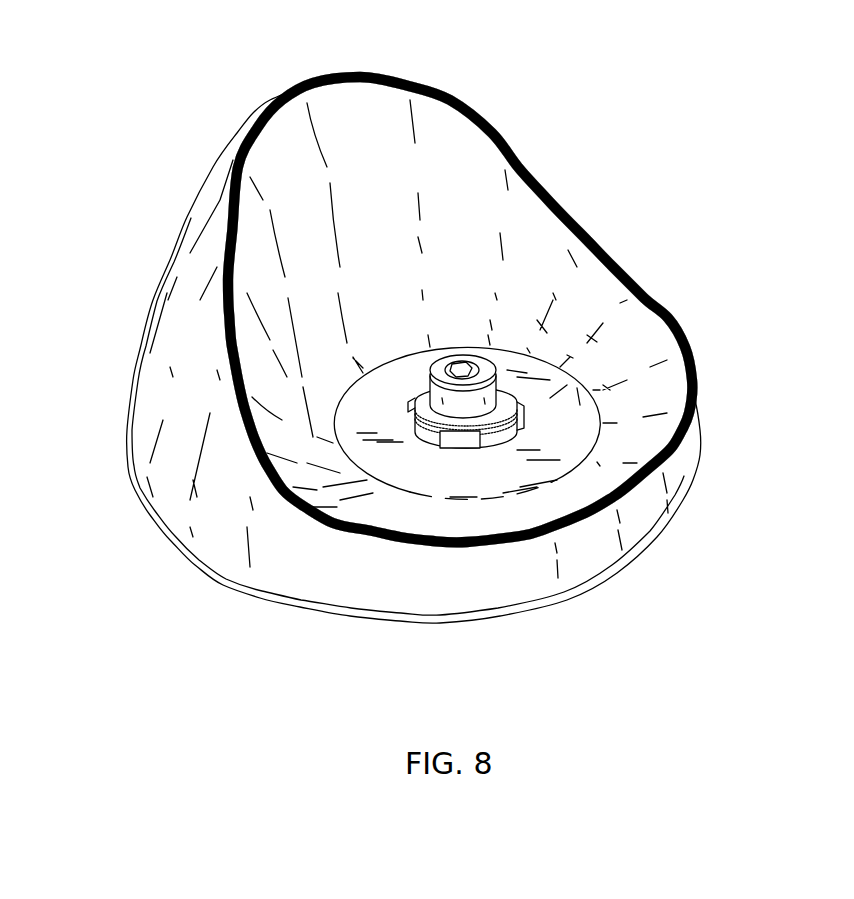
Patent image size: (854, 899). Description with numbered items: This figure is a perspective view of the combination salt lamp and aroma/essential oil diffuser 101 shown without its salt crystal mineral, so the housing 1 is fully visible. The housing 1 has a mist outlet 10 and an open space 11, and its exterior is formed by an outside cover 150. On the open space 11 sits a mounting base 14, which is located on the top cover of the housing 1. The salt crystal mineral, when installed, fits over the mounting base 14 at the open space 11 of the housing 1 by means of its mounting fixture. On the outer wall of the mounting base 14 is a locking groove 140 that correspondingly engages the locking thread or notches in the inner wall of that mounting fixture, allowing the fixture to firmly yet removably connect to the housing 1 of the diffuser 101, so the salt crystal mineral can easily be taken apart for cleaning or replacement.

The housing 1 is at (163, 485).
The mist outlet 10 is at (273, 103).
The open space 11 is at (553, 397).
The mounting base 14 is at (523, 518).
The combination salt lamp and aroma/essential oil diffuser 101 is at (658, 67).
The locking groove 140 is at (437, 443).
The outside cover 150 is at (150, 400).